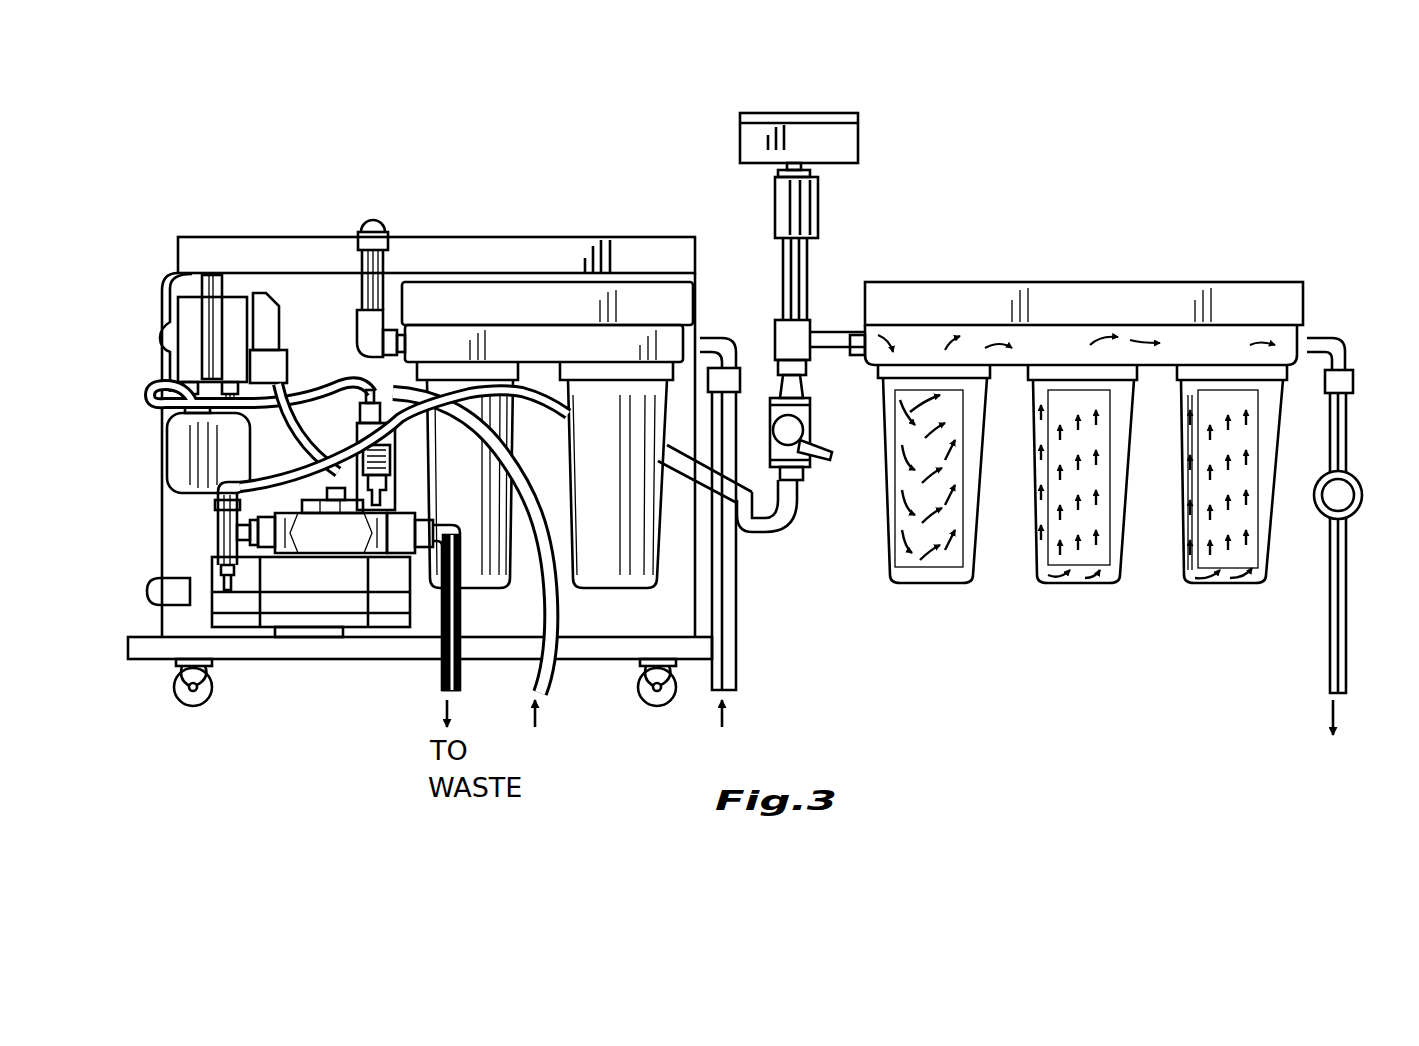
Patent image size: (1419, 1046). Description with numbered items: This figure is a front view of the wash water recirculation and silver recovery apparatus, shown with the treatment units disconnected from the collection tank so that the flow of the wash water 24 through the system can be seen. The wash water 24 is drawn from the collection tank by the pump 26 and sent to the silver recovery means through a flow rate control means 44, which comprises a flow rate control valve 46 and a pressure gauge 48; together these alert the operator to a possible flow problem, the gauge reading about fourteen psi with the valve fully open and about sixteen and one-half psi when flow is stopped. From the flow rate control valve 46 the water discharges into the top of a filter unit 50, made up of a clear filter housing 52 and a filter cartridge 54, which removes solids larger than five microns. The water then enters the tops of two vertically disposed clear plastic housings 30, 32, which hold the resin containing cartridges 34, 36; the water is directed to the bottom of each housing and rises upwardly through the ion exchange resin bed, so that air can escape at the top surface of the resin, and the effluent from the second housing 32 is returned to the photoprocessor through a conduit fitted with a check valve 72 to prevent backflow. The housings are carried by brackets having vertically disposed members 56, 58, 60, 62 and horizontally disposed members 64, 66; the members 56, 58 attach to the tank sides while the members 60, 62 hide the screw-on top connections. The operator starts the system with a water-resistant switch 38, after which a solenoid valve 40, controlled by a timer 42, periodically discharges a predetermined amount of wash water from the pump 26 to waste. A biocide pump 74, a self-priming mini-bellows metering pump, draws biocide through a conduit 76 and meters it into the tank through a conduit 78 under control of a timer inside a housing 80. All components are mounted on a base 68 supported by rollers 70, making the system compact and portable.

The wash water 24 is at (1006, 348).
The pump 26 is at (333, 591).
The first housing 30 is at (1042, 562).
The second housing 32 is at (1207, 585).
The resin containing cartridge 34 is at (1194, 486).
The ion exchange resin cartridge 36 is at (1252, 495).
The switch 38 is at (170, 306).
The solenoid valve 40 is at (348, 548).
The timer 42 is at (272, 328).
The flow rate control means 44 is at (780, 275).
The flow rate control valve 46 is at (548, 461).
The pressure gauge 48 is at (860, 143).
The filter unit 50 is at (943, 587).
The filter housing 52 is at (543, 302).
The filter cartridge 54 is at (1112, 313).
The vertically disposed member 56 is at (582, 295).
The vertically disposed member 58 is at (1225, 282).
The vertically disposed member 60 is at (448, 343).
The vertically disposed member 62 is at (915, 340).
The horizontally disposed member 64 is at (510, 343).
The horizontally disposed member 66 is at (1050, 340).
The base 68 is at (155, 647).
The rollers 70 is at (207, 703).
The check valve 72 is at (1358, 472).
The biocide pump 74 is at (362, 440).
The conduit 76 is at (552, 597).
The conduit 78 is at (160, 395).
The housing 80 is at (188, 437).